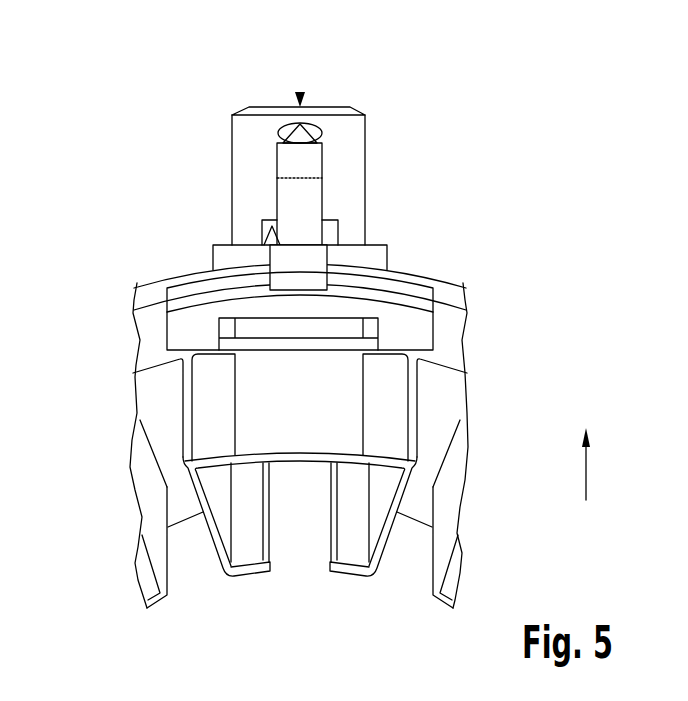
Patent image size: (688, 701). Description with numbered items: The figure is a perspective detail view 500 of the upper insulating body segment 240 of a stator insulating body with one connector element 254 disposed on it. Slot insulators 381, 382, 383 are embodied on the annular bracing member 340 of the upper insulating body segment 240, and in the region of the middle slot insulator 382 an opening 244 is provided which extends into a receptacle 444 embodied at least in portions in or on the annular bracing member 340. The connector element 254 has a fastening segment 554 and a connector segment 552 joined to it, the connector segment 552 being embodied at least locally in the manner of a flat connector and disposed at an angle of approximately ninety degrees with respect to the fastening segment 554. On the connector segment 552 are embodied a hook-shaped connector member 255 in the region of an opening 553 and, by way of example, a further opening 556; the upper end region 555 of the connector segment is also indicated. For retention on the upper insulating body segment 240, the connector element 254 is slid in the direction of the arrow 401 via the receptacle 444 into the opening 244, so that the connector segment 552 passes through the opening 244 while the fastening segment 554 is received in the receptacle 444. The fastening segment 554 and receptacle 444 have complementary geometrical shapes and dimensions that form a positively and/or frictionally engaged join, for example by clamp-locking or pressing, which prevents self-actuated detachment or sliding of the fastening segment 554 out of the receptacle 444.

The detail view 500 is at (84, 91).
The top face of housing block 555 is at (263, 112).
The connector element 254 is at (301, 95).
The connector segment 552 is at (255, 155).
The further opening 556 is at (322, 142).
The hook-shaped connector member 255 is at (300, 187).
The opening 553 is at (262, 244).
The receptacle 444 is at (182, 301).
The opening 244 is at (308, 259).
The annular bracing member 340 is at (448, 293).
The fastening segment 554 is at (415, 328).
The upper insulating body segment 240 is at (160, 402).
The arrow 401 is at (585, 472).
The slot insulator 381 is at (455, 589).
The slot insulator 382 is at (350, 552).
The slot insulator 383 is at (147, 582).